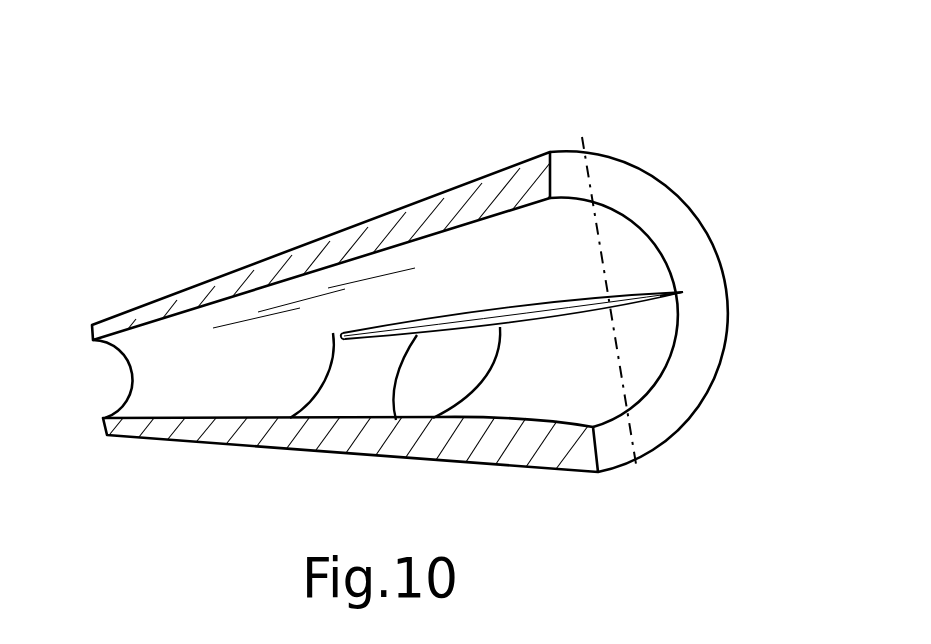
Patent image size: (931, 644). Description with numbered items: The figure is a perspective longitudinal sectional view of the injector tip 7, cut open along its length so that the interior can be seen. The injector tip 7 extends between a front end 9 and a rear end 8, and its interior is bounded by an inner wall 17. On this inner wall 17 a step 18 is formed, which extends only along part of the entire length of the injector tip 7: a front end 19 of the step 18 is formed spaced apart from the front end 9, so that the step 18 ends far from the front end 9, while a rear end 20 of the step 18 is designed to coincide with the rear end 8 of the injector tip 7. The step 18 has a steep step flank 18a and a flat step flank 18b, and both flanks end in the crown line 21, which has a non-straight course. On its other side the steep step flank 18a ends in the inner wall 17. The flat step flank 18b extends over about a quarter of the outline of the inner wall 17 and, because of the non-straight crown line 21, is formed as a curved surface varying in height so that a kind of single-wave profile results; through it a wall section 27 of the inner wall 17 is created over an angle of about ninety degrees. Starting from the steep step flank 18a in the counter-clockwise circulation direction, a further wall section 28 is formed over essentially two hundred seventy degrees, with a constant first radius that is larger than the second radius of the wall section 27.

The injector tip 7 is at (435, 282).
The rear end 8 is at (643, 165).
The front end 9 is at (90, 338).
The inner wall 17 is at (193, 345).
The step 18 is at (515, 253).
The steep step flank 18a is at (517, 313).
The flat step flank 18b is at (587, 348).
The front end of step 19 is at (343, 335).
The rear end of step 20 is at (683, 293).
The crown line 21 is at (396, 420).
The wall section 27 is at (550, 403).
The further wall section 28 is at (468, 257).